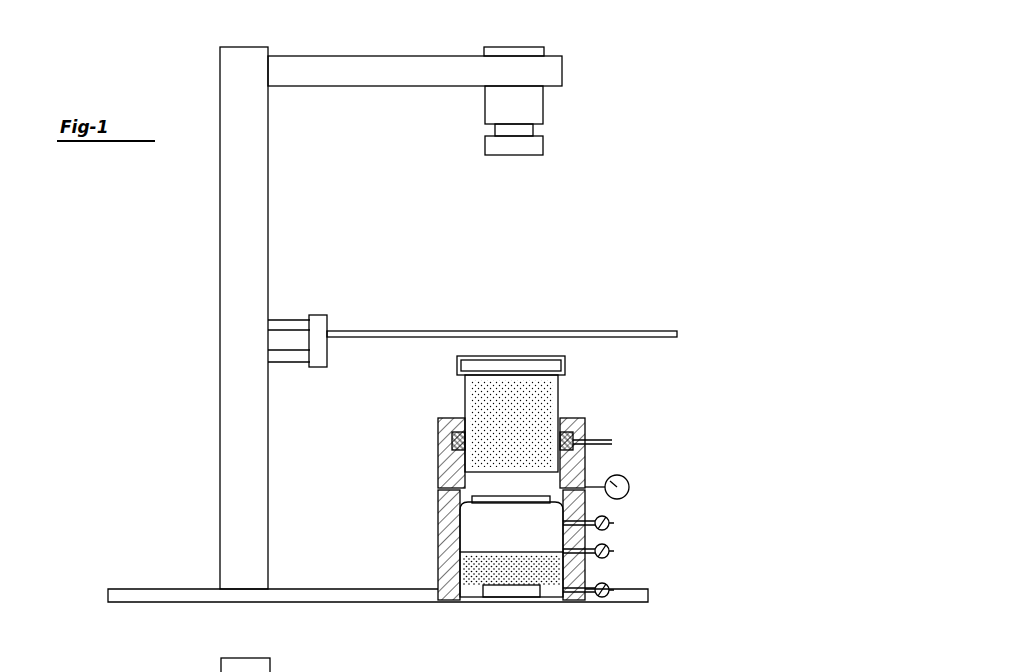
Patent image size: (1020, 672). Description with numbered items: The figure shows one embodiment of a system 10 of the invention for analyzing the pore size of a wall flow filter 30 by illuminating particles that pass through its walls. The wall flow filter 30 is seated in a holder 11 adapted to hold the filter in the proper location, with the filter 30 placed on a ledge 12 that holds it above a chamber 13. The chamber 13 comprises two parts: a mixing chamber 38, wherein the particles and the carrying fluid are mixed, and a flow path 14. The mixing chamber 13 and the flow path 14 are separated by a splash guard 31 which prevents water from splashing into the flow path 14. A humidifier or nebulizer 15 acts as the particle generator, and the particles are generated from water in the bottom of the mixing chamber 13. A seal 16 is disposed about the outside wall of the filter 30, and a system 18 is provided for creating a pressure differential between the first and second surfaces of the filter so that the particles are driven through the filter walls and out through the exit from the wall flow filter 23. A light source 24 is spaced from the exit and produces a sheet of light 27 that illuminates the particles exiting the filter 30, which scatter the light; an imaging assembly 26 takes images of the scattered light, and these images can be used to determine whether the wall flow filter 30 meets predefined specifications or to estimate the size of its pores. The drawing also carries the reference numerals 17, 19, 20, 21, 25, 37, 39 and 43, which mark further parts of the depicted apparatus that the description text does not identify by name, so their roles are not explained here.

The system 10 is at (197, 293).
The holder 11 is at (595, 402).
The ledge 12 is at (455, 452).
The chamber 13 is at (455, 538).
The flow path 14 is at (472, 487).
The humidifier or nebulizer 15 is at (515, 600).
The seal 16 is at (566, 440).
The port 17 is at (612, 442).
The system for creating a pressure differential 18 is at (614, 522).
The valve 19 is at (614, 550).
The valve 20 is at (614, 590).
The pressure gauge 21 is at (630, 487).
The exit from the wall flow filter 23 is at (466, 358).
The light source 24 is at (290, 330).
The column 25 is at (258, 169).
The imaging assembly 26 is at (537, 107).
The sheet of light 27 is at (490, 331).
The wall flow filter 30 is at (478, 409).
The splash guard 31 is at (510, 503).
The slide block 37 is at (318, 315).
The mixing chamber 38 is at (494, 478).
The beam 39 is at (415, 73).
The porous base 43 is at (490, 603).